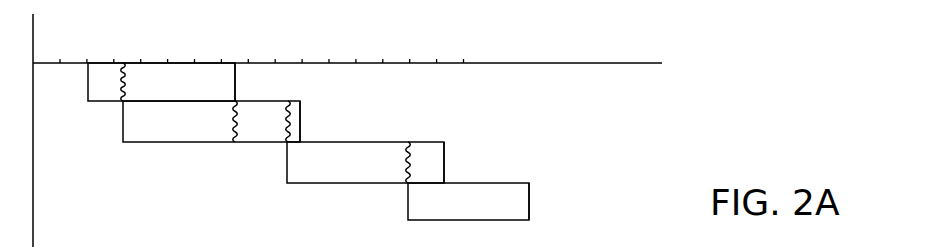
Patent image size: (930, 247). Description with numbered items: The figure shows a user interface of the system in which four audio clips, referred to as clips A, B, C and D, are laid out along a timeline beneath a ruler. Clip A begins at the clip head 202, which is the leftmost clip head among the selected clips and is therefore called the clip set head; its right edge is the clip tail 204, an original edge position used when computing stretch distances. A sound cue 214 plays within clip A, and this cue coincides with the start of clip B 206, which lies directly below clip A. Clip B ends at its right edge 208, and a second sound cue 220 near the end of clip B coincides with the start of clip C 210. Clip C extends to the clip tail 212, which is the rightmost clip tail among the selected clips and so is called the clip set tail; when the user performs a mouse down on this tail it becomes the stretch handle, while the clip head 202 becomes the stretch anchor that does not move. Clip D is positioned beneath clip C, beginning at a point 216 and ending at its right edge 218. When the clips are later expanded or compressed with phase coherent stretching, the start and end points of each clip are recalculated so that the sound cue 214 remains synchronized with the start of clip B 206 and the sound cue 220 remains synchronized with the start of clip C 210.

The clip head of clip A 202 is at (103, 43).
The clip tail of clip A 204 is at (235, 63).
The start of clip B 206 is at (123, 142).
The end of block B 208 is at (300, 101).
The start of clip C 210 is at (287, 183).
The clip tail of clip C 212 is at (444, 143).
The sound cue 214 is at (123, 63).
The block D interval 216 is at (408, 220).
The end of block D 218 is at (529, 183).
The sound cue 220 is at (288, 101).